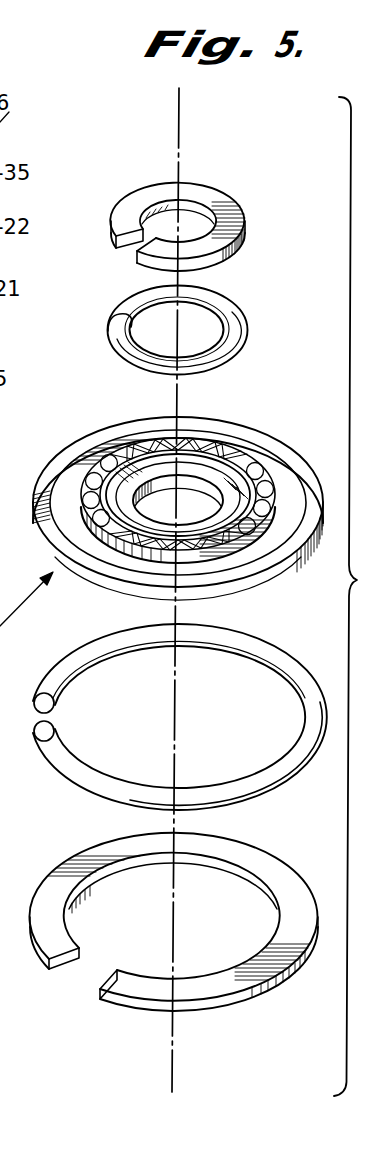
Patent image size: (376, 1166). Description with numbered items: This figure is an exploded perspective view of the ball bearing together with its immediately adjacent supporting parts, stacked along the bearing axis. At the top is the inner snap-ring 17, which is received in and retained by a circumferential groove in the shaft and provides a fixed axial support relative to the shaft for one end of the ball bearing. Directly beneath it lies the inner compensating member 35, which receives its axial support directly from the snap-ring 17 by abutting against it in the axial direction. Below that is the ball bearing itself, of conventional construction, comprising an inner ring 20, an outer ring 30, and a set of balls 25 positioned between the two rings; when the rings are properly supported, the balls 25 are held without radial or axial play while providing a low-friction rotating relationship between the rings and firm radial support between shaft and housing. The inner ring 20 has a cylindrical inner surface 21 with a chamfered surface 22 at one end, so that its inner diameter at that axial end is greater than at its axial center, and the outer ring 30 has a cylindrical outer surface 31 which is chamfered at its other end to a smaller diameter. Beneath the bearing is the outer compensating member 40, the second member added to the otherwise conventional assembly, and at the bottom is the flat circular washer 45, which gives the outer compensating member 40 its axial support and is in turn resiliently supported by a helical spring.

The inner snap-ring 17 is at (214, 194).
The inner ring 20 is at (162, 507).
The cylindrical inner surface 21 is at (165, 488).
The chamfered surface 22 is at (138, 470).
The balls 25 is at (88, 492).
The outer ring 30 is at (278, 468).
The cylindrical outer surface 31 is at (253, 582).
The inner compensating member 35 is at (230, 315).
The outer compensating member 40 is at (83, 778).
The flat circular washer 45 is at (220, 985).